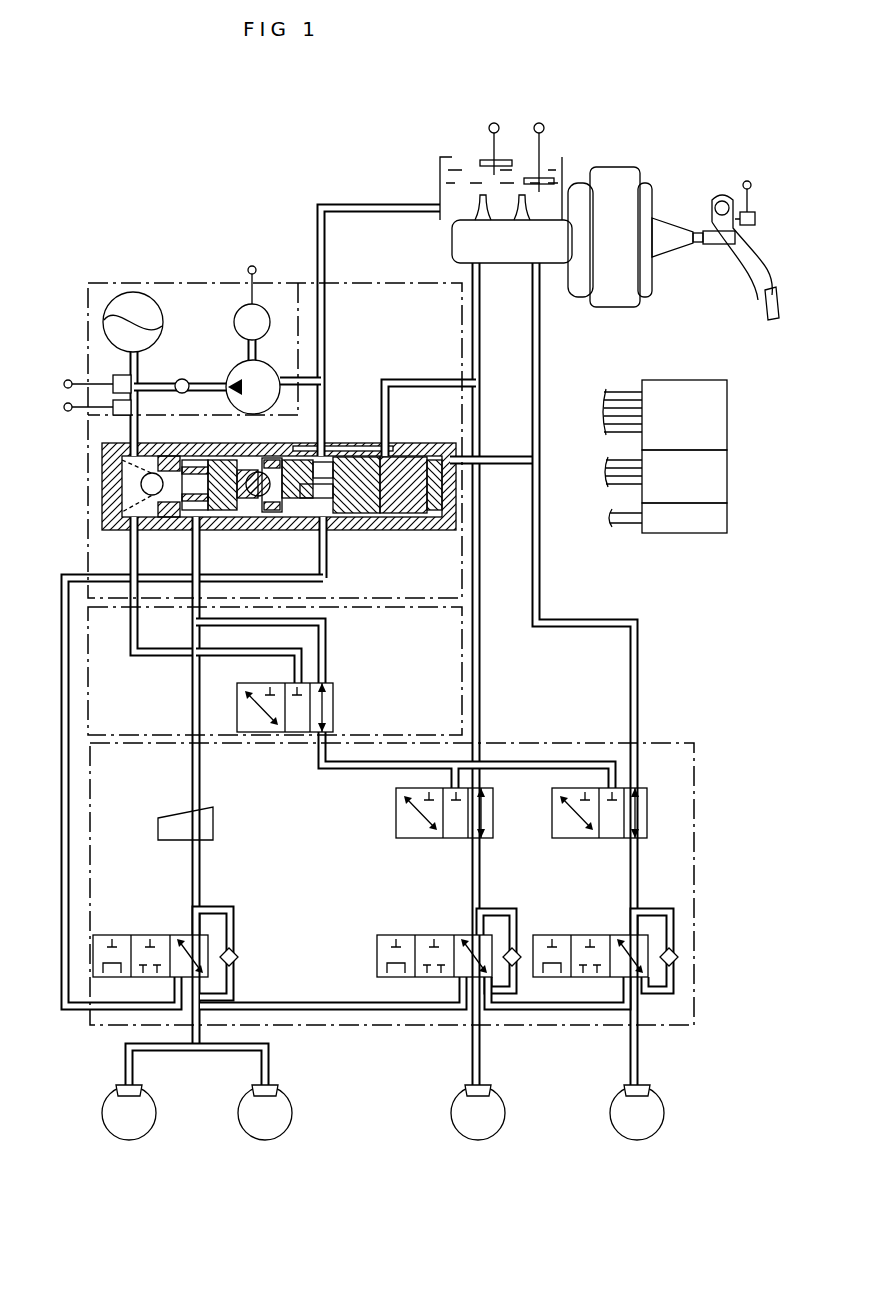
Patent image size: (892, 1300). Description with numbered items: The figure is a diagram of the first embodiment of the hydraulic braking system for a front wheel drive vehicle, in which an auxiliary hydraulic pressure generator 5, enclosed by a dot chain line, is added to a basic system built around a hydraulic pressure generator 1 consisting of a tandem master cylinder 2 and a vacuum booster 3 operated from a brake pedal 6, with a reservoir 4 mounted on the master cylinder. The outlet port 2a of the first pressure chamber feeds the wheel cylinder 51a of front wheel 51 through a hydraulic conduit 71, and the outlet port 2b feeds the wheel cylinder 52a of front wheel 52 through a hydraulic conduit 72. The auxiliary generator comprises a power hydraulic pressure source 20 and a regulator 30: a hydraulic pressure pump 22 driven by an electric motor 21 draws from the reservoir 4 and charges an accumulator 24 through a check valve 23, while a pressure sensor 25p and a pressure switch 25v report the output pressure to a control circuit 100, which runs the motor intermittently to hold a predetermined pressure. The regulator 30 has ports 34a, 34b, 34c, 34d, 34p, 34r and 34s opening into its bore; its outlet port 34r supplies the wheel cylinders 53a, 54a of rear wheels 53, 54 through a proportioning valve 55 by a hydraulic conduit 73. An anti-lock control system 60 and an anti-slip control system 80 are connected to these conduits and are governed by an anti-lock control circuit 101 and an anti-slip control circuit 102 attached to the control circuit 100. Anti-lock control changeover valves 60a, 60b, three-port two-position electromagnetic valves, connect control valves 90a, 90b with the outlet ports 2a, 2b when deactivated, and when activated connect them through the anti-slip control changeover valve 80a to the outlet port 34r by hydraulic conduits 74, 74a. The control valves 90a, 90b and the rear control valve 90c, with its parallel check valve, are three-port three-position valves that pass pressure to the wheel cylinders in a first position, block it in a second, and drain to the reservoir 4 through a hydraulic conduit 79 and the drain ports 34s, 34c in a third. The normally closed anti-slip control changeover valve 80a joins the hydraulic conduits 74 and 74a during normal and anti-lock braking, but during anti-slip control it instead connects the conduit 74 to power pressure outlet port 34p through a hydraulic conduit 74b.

The hydraulic pressure generator 1 is at (654, 284).
The tandem master cylinder 2 is at (568, 266).
The outlet port 2a is at (536, 268).
The outlet port 2b is at (478, 266).
The vacuum booster 3 is at (614, 292).
The reservoir 4 is at (440, 180).
The auxiliary hydraulic pressure generator 5 is at (356, 283).
The brake pedal 6 is at (740, 302).
The power hydraulic pressure source 20 is at (183, 283).
The electric motor 21 is at (236, 316).
The hydraulic pressure pump 22 is at (236, 378).
The check valve 23 is at (181, 379).
The accumulator 24 is at (163, 322).
The pressure sensor 25p is at (113, 380).
The pressure switch 25v is at (113, 408).
The regulator 30 is at (102, 490).
The port 34a is at (457, 441).
The port 34b is at (385, 441).
The drain port 34c is at (318, 443).
The port 34d is at (138, 445).
The power hydraulic pressure outlet port 34p is at (134, 535).
The outlet port 34r is at (198, 535).
The drain port 34s is at (325, 535).
The front wheel 51 is at (667, 1120).
The wheel cylinder 51a is at (656, 1086).
The front wheel 52 is at (506, 1122).
The wheel cylinder 52a is at (496, 1088).
The rear wheel 53 is at (292, 1118).
The wheel cylinder 53a is at (282, 1088).
The rear wheel 54 is at (156, 1118).
The wheel cylinder 54a is at (146, 1090).
The proportioning valve 55 is at (214, 826).
The anti-lock control system 60 is at (695, 790).
The anti-lock control changeover valve 60a is at (556, 838).
The anti-lock control changeover valve 60b is at (398, 838).
The hydraulic conduit 71 is at (540, 556).
The hydraulic conduit 72 is at (483, 556).
The hydraulic conduit 73 is at (199, 776).
The hydraulic conduit 74 is at (396, 782).
The hydraulic conduit 74a is at (326, 648).
The hydraulic conduit 74b is at (134, 660).
The hydraulic conduit 79 is at (62, 804).
The anti-slip control system 80 is at (480, 710).
The anti-slip control changeover valve 80a is at (334, 706).
The control valve 90a is at (562, 935).
The control valve 90b is at (388, 935).
The control valve 90c is at (108, 935).
The control circuit 100 is at (705, 408).
The anti-lock control circuit 101 is at (708, 470).
The anti-slip control circuit 102 is at (712, 520).